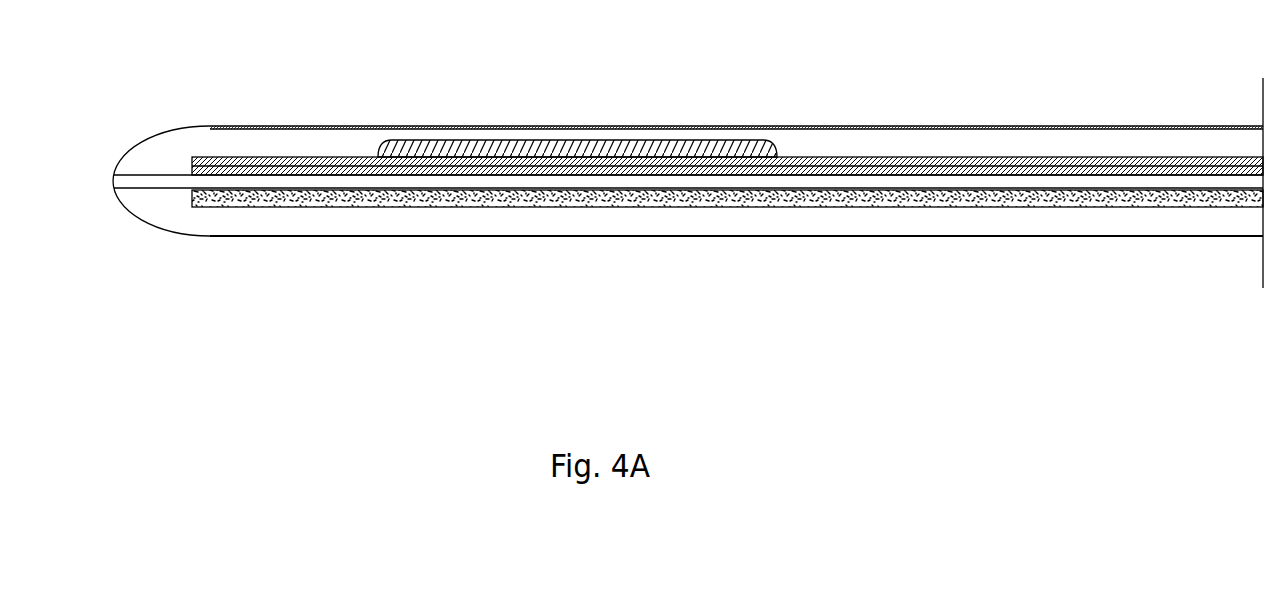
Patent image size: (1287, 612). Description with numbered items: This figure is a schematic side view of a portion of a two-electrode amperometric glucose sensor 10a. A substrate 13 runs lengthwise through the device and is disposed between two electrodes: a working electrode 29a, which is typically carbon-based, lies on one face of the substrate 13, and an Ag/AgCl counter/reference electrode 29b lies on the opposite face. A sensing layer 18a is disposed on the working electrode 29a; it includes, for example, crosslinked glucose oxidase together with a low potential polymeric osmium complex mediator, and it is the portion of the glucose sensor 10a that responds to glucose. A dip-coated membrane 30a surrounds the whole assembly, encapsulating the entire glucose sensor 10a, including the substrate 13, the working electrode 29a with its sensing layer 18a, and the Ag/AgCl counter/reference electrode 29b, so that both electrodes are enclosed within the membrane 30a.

The amperometric glucose sensor 10a is at (852, 98).
The membrane 30a is at (268, 217).
The sensing layer 18a is at (540, 142).
The working electrode 29a is at (331, 168).
The substrate 13 is at (773, 180).
The counter/reference electrode 29b is at (957, 207).